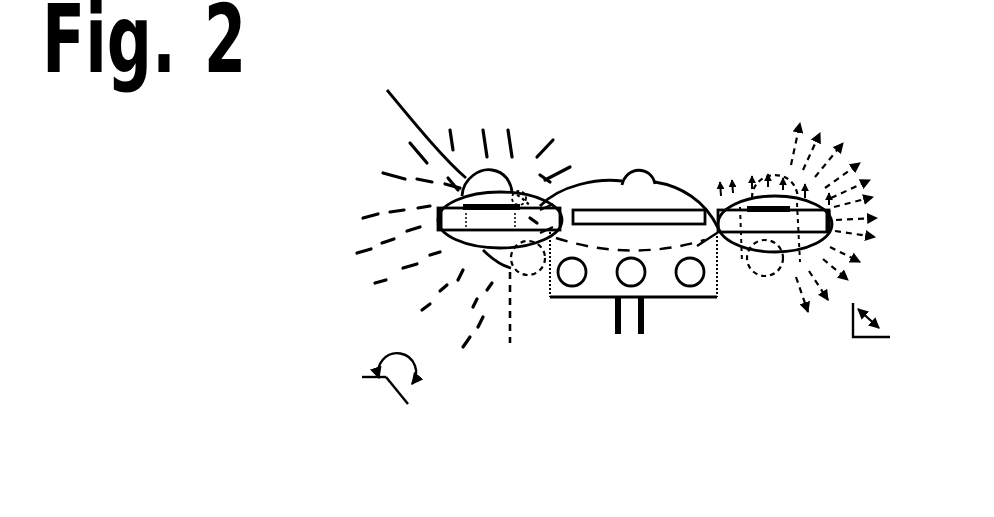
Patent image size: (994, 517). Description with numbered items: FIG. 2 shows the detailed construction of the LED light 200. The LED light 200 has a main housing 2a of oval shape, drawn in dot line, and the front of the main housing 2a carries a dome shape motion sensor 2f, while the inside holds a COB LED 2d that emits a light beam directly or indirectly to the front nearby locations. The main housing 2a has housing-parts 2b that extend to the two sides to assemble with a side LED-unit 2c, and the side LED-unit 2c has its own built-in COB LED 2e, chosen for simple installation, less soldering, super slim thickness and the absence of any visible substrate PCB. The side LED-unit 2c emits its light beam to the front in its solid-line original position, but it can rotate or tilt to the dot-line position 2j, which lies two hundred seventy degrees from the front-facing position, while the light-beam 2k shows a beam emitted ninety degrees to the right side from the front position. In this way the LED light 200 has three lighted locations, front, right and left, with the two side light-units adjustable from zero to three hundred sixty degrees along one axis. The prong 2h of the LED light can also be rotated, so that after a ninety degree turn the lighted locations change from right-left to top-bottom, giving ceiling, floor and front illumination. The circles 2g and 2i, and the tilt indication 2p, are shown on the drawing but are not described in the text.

The LED light 200 is at (793, 64).
The main housing 2a is at (693, 200).
The housing-parts 2b is at (440, 228).
The side LED-unit 2c is at (517, 192).
The COB LED(s) 2d is at (630, 209).
The COB LED(s) 2e is at (492, 206).
The dome shape motion sensor 2f is at (660, 176).
The left socket 2g is at (602, 287).
The prong 2h is at (618, 345).
The right socket 2i is at (697, 276).
The 270 degree position 2j is at (517, 265).
The light-beam 2k is at (765, 268).
The tilt direction arrows 2p is at (860, 261).